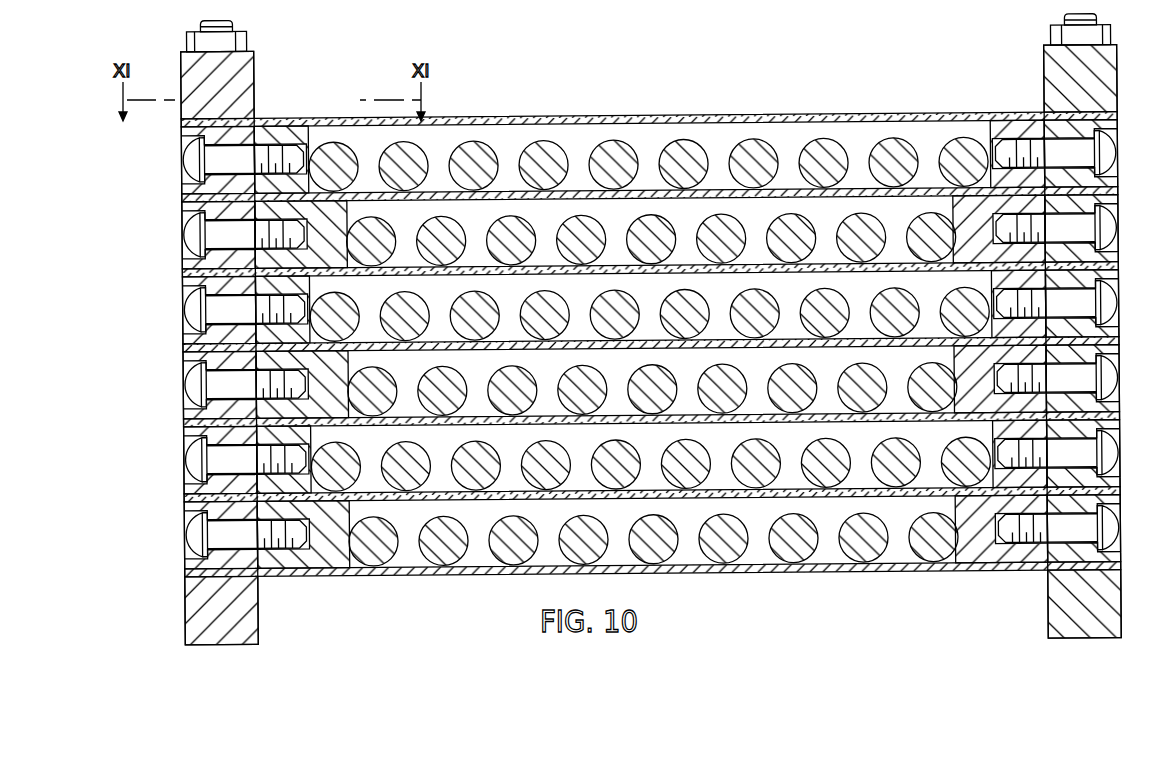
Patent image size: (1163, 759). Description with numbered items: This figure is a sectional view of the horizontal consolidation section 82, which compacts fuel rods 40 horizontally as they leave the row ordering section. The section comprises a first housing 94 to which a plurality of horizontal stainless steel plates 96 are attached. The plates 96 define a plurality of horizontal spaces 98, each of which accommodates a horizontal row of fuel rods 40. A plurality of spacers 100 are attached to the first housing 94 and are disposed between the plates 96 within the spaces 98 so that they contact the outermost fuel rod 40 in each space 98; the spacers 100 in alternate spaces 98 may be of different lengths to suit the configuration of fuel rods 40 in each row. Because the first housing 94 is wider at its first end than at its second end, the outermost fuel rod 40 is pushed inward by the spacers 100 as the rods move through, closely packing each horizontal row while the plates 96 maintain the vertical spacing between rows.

The horizontal consolidation section 82 is at (166, 362).
The first housing 94 is at (1098, 74).
The horizontal stainless steel plates 96 is at (718, 188).
The horizontal spaces 98 is at (438, 148).
The spacers 100 is at (297, 140).
The fuel rods 40 is at (605, 160).